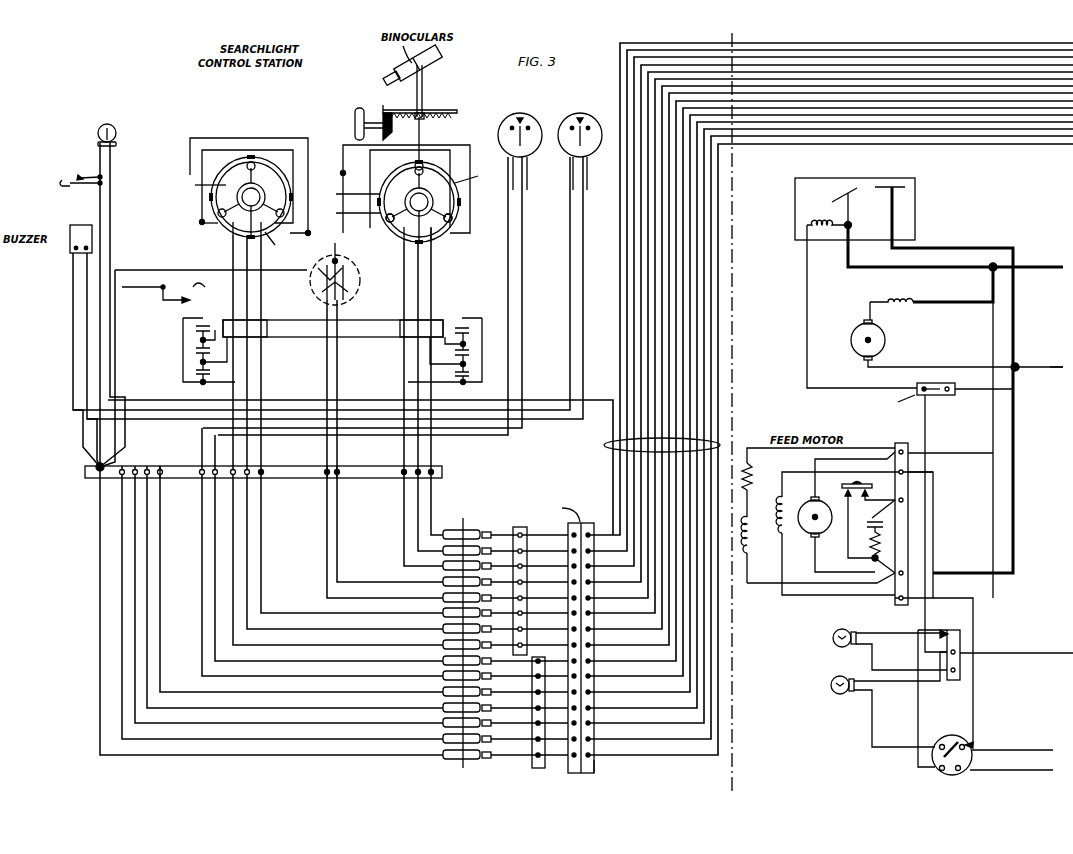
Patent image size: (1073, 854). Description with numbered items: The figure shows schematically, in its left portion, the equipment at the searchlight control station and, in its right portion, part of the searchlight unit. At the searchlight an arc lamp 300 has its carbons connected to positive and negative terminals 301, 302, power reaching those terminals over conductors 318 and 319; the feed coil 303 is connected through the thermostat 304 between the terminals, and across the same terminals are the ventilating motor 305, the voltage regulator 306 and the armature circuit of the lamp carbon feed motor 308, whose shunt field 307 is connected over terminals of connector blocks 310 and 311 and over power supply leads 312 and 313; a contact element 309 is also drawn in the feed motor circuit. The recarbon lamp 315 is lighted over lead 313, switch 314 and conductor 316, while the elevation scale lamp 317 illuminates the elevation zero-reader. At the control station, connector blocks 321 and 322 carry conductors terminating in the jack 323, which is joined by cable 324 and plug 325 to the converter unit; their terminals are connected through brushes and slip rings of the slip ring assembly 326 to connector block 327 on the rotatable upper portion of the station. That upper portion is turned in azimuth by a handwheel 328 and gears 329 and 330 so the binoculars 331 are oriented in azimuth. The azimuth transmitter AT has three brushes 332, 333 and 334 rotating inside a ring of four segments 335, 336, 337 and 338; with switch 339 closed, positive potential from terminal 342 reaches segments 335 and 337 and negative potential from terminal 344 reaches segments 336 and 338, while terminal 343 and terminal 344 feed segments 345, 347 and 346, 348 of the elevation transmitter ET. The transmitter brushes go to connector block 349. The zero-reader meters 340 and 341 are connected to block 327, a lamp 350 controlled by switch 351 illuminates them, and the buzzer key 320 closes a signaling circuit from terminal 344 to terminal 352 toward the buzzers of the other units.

The arc lamp 300 is at (908, 187).
The positive terminal 301 is at (990, 272).
The negative terminal 302 is at (1015, 375).
The feed coil 303 is at (807, 225).
The thermostat 304 is at (937, 395).
The ventilating motor 305 is at (855, 332).
The voltage regulator 306 is at (745, 585).
The shunt field 307 is at (782, 535).
The lamp carbon feed motor 308 is at (810, 475).
The switch contact 309 is at (862, 480).
The connector block 310 is at (908, 540).
The connector block 311 is at (962, 651).
The power supply lead 312 is at (1000, 657).
The power supply lead 313 is at (1000, 773).
The switch 314 is at (940, 773).
The recarbon lamp 315 is at (833, 690).
The conductor 316 is at (1040, 748).
The elevation scale lamp 317 is at (833, 638).
The conductor 318 is at (1046, 258).
The conductor 319 is at (1046, 364).
The buzzer key 320 is at (166, 292).
The connector block 321 is at (516, 527).
The connector block 322 is at (537, 768).
The jack 323 is at (574, 773).
The cable 324 is at (605, 447).
The plug 325 is at (590, 775).
The slip ring assembly 326 is at (456, 762).
The connector block 327 is at (85, 474).
The handwheel 328 is at (355, 127).
The gear 329 is at (383, 110).
The gear 330 is at (444, 114).
The binoculars 331 is at (425, 66).
The brush 332 is at (415, 168).
The brush 333 is at (447, 225).
The brush 334 is at (391, 225).
The segment 335 is at (462, 196).
The segment 336 is at (435, 240).
The segment 337 is at (308, 214).
The segment 338 is at (308, 195).
The switch 339 is at (348, 290).
The zero-reader meter 340 is at (560, 150).
The zero-reader meter 341 is at (530, 160).
The terminal 342 is at (337, 480).
The terminal 343 is at (327, 480).
The terminal 344 is at (92, 468).
The segment 345 is at (343, 174).
The segment 346 is at (282, 246).
The segment 347 is at (213, 210).
The segment 348 is at (237, 160).
The connector block 349 is at (437, 320).
The lamp 350 is at (100, 130).
The switch 351 is at (75, 178).
The terminal 352 is at (163, 480).